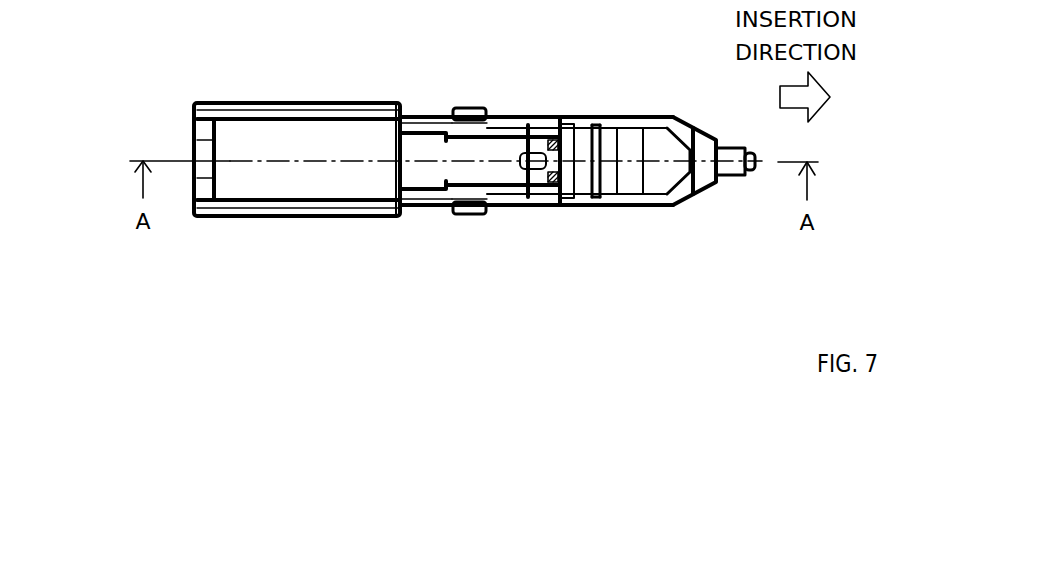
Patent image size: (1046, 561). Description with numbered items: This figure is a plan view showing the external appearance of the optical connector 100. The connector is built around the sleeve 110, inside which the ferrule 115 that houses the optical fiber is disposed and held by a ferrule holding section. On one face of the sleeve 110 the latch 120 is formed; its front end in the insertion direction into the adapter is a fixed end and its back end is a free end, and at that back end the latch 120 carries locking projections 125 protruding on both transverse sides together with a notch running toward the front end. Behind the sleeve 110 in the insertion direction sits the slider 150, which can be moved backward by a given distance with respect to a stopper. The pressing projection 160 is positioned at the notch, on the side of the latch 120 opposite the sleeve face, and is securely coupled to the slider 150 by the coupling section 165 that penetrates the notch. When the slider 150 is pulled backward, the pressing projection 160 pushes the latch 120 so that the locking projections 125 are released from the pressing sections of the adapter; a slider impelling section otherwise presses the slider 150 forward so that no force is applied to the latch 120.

The optical connector 100 is at (391, 72).
The sleeve 110 is at (631, 208).
The ferrule 115 is at (735, 180).
The latch 120 is at (643, 152).
The locking projections 125 is at (573, 204).
The slider 150 is at (287, 219).
The pressing projection 160 is at (570, 125).
The coupling section 165 is at (538, 126).